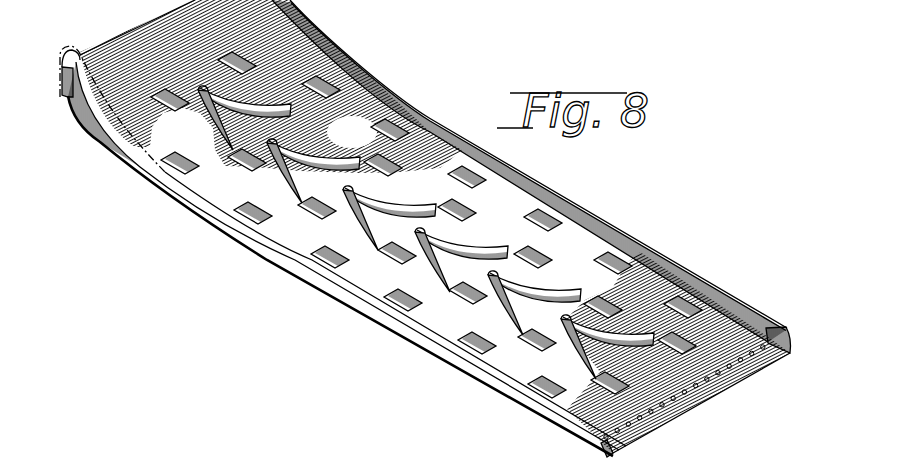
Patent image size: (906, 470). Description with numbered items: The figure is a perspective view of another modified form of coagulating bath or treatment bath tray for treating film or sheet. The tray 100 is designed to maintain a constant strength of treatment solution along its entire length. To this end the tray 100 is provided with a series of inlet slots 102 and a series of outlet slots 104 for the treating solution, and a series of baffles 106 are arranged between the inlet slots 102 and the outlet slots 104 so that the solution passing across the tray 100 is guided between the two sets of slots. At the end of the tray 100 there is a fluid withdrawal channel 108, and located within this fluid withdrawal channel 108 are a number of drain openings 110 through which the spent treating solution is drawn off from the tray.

The tray 100 is at (361, 312).
The inlet slots 102 is at (165, 108).
The outlet slots 104 is at (247, 218).
The baffles 106 is at (340, 161).
The fluid withdrawal channel 108 is at (784, 357).
The drain openings 110 is at (722, 377).